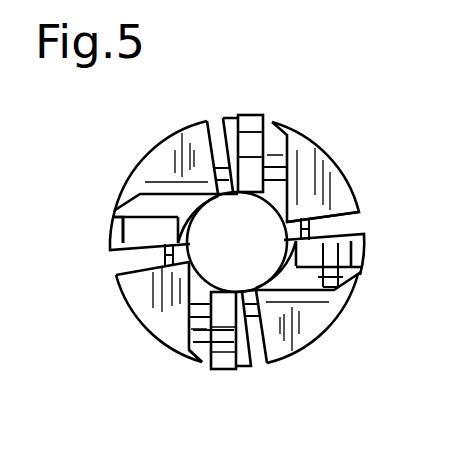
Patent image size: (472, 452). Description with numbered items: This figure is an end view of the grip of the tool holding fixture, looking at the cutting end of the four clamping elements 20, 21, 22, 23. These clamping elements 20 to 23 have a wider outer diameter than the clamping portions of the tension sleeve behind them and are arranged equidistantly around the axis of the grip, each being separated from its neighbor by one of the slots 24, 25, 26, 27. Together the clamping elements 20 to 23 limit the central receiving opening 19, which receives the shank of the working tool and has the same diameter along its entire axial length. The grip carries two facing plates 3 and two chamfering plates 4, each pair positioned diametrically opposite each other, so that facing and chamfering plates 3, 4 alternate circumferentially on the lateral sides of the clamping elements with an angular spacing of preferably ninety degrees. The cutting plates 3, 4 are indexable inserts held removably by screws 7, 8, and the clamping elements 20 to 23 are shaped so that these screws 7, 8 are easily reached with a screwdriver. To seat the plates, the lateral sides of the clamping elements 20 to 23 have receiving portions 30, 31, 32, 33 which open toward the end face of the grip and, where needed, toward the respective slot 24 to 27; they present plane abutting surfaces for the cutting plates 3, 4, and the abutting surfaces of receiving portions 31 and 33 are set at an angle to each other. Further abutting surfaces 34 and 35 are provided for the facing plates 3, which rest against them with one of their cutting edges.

The facing plate 3 is at (245, 148).
The chamfering plate 4 is at (137, 233).
The screw 7 is at (170, 348).
The screw 8 is at (336, 279).
The receiving opening 19 is at (258, 208).
The clamping element 20 is at (296, 198).
The clamping element 21 is at (173, 157).
The clamping element 22 is at (138, 289).
The clamping element 23 is at (307, 327).
The slot 24 is at (217, 155).
The slot 25 is at (130, 258).
The slot 26 is at (253, 350).
The slot 27 is at (362, 215).
The receiving portion 30 is at (255, 142).
The receiving portion 31 is at (132, 213).
The receiving portion 32 is at (210, 300).
The receiving portion 33 is at (340, 274).
The abutting surface 34 is at (190, 210).
The abutting surface 35 is at (306, 285).